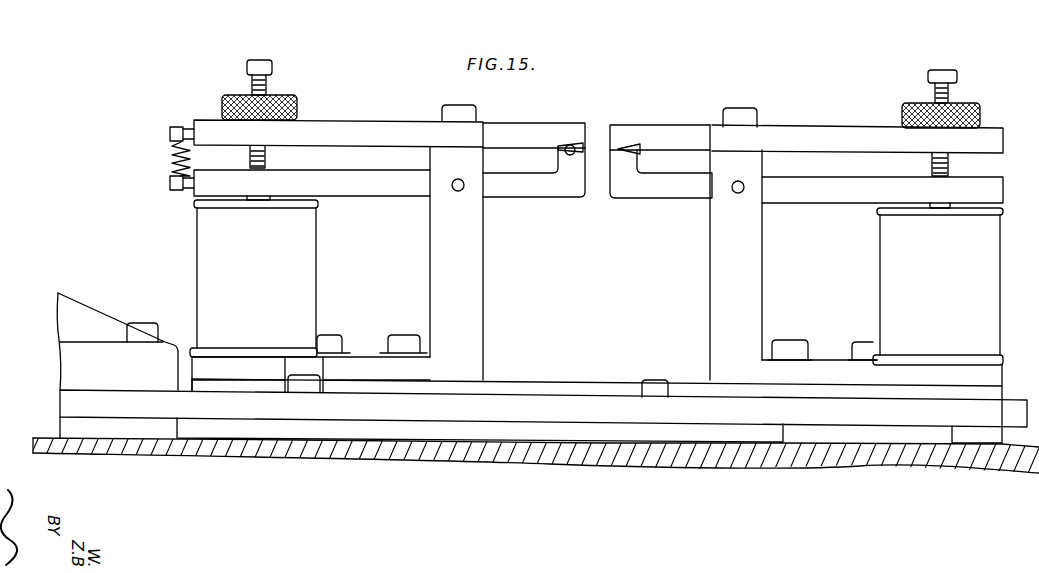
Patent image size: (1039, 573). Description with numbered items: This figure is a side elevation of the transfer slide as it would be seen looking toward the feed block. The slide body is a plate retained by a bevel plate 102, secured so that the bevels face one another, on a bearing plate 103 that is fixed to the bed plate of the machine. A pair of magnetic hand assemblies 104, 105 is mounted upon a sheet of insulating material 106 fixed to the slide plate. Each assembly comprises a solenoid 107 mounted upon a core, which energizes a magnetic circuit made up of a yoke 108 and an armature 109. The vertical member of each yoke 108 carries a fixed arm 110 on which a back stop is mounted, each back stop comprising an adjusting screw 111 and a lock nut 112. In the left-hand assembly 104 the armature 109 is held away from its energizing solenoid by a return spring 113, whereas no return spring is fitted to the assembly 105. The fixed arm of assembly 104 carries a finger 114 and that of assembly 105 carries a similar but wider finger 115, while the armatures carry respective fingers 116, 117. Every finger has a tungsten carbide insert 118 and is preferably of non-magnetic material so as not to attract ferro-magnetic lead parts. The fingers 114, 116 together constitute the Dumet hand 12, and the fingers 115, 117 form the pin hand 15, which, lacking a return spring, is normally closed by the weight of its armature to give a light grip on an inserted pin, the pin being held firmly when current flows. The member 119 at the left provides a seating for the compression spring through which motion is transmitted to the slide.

The Dumet hand 12 is at (589, 145).
The pin hand 15 is at (607, 157).
The bevel plate 102 is at (747, 432).
The bearing plate 103 is at (897, 440).
The magnetic hand assembly 104 is at (490, 270).
The magnetic hand assembly 105 is at (704, 276).
The sheet of insulating material 106 is at (497, 380).
The solenoid 107 is at (260, 273).
The yoke 108 is at (390, 368).
The armature 109 is at (401, 190).
The fixed arm 110 is at (380, 135).
The adjusting screw 111 is at (257, 67).
The lock nut 112 is at (298, 108).
The return spring 113 is at (173, 167).
The finger 114 is at (537, 137).
The finger 115 is at (622, 133).
The finger 116 is at (562, 190).
The finger 117 is at (643, 185).
The tungsten carbide insert 118 is at (557, 149).
The member 119 is at (78, 313).